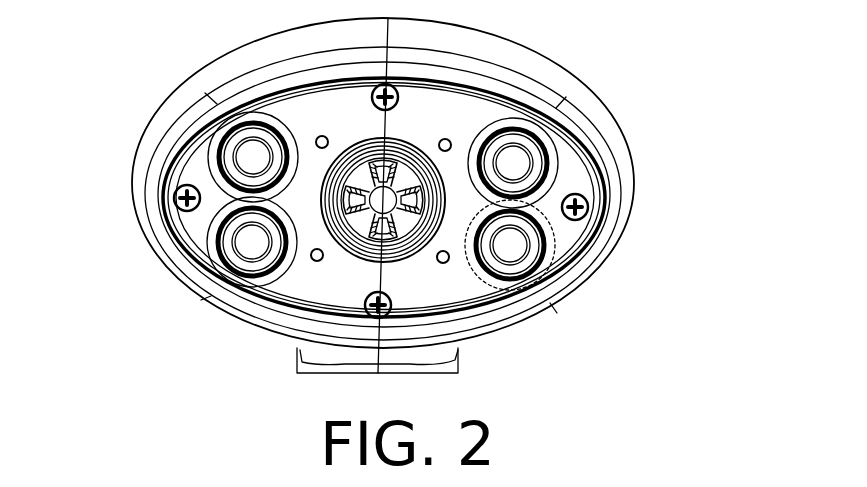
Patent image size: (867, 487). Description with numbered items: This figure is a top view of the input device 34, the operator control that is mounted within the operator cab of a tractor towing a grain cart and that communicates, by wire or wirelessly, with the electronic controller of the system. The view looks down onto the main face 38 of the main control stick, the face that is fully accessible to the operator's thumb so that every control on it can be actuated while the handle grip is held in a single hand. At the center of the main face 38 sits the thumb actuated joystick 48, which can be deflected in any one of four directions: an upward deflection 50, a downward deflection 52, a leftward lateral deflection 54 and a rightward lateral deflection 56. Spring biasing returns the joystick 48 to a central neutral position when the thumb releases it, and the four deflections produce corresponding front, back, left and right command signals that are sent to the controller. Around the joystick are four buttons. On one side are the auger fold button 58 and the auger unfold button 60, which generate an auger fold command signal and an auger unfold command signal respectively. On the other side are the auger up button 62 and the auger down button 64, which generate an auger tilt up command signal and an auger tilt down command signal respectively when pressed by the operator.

The input device 34 is at (640, 193).
The main face 38 is at (469, 290).
The thumb actuated joystick 48 is at (386, 197).
The upward deflection 50 is at (382, 183).
The downward deflection 52 is at (388, 232).
The leftward lateral deflection 54 is at (372, 200).
The rightward lateral deflection 56 is at (400, 199).
The auger fold button 58 is at (250, 153).
The auger unfold button 60 is at (240, 250).
The auger up button 62 is at (518, 150).
The auger down button 64 is at (512, 252).